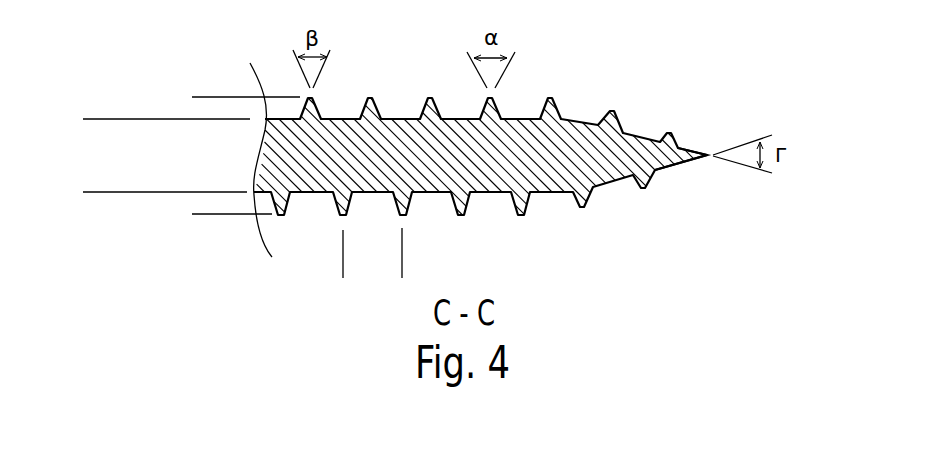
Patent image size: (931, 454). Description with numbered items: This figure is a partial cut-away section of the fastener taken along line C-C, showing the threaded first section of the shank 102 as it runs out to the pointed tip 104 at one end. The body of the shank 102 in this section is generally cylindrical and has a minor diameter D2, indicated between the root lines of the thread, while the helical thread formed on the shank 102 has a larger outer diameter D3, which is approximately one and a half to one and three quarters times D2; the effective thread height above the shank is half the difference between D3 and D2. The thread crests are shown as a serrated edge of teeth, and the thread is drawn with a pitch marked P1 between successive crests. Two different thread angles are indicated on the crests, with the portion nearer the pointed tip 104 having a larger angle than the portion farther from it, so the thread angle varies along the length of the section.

The shank 102 is at (413, 143).
The pointed tip 104 is at (706, 152).
The minor diameter D2 is at (160, 228).
The thread diameter D3 is at (227, 248).
The thread pitch P1 is at (437, 262).